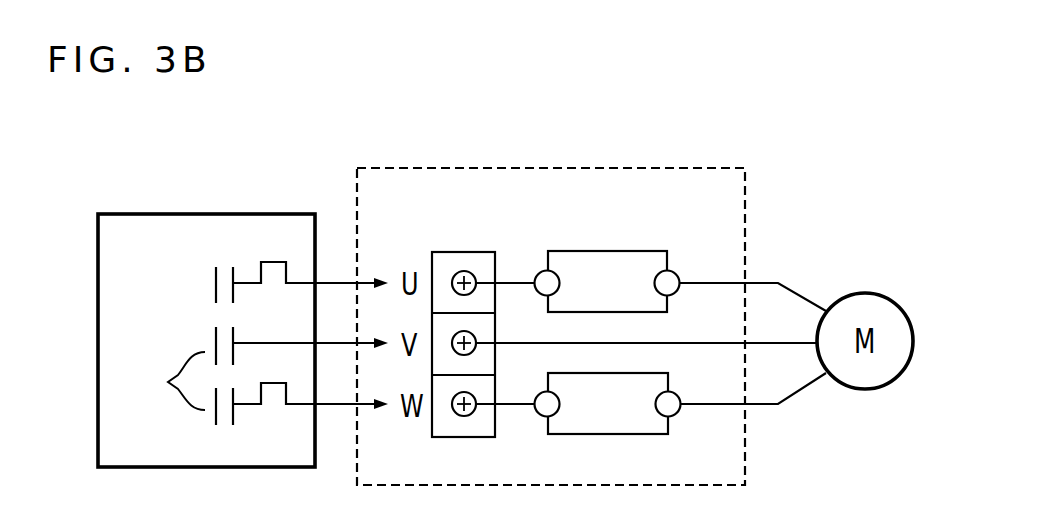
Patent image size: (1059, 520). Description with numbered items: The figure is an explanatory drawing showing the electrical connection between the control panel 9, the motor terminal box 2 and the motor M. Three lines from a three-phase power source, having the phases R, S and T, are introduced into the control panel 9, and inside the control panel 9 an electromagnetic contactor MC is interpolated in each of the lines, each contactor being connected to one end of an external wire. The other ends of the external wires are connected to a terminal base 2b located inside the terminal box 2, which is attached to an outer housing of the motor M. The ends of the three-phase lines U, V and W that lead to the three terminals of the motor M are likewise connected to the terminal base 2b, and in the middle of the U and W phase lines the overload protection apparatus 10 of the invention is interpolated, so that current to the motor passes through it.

The control panel 9 is at (203, 213).
The motor terminal box 2 is at (610, 168).
The terminal base 2b is at (463, 252).
The overload protection apparatus 10 is at (614, 241).